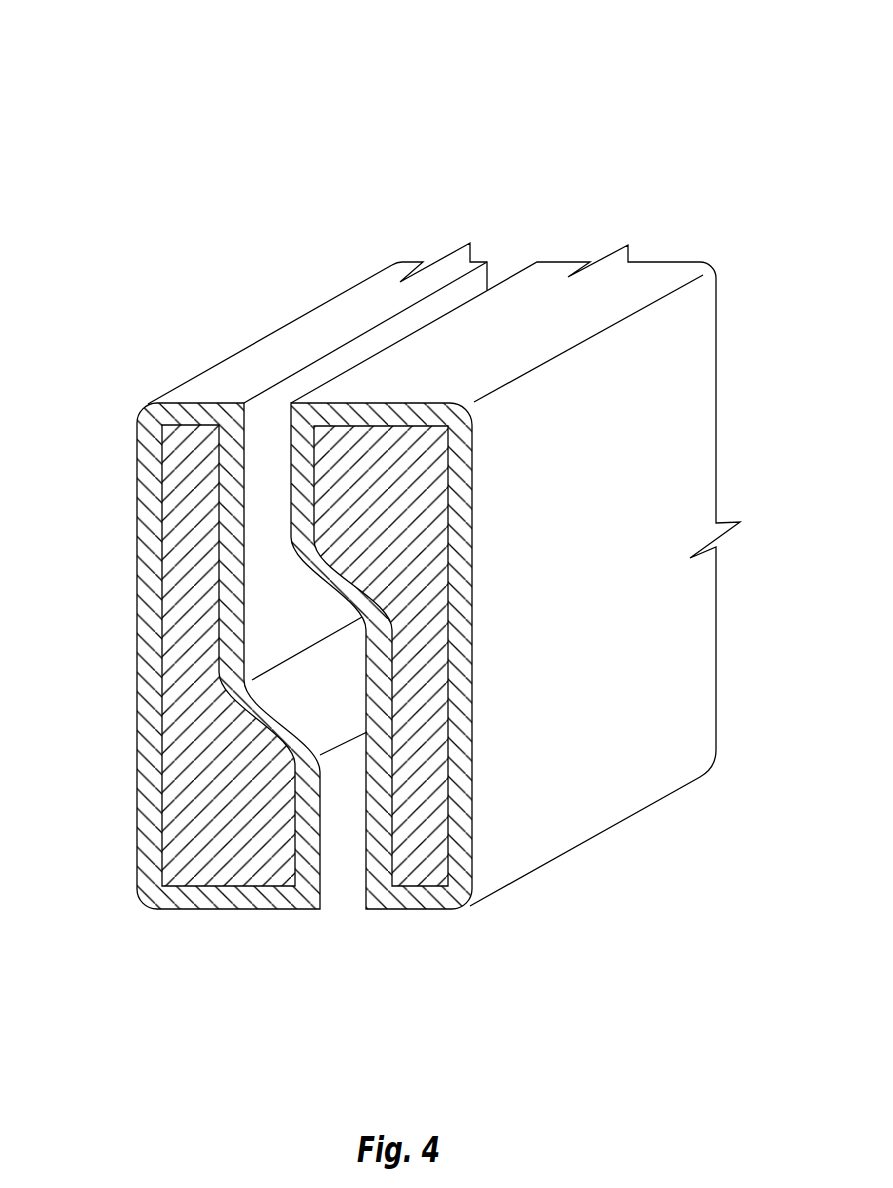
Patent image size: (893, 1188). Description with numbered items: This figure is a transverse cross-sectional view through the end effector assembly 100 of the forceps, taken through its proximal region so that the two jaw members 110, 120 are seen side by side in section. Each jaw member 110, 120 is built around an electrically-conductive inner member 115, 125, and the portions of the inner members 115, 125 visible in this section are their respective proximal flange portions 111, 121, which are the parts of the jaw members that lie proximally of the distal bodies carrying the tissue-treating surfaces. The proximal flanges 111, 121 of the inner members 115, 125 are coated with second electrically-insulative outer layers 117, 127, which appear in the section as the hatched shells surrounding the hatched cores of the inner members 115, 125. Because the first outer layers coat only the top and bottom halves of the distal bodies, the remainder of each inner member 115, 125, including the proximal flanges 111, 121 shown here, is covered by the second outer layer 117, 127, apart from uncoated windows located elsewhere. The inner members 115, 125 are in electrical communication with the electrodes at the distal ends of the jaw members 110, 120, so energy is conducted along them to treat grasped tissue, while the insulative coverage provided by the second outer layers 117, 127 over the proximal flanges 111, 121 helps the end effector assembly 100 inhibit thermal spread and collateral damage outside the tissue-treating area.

The end effector assembly 100 is at (484, 160).
The jaw member 110 is at (187, 720).
The proximal flange portion 111 is at (266, 353).
The inner member 115 is at (173, 708).
The second electrically-insulative outer layer 117 is at (150, 645).
The jaw member 120 is at (421, 720).
The proximal flange portion 121 is at (546, 287).
The inner member 125 is at (432, 582).
The second electrically-insulative outer layer 127 is at (460, 672).